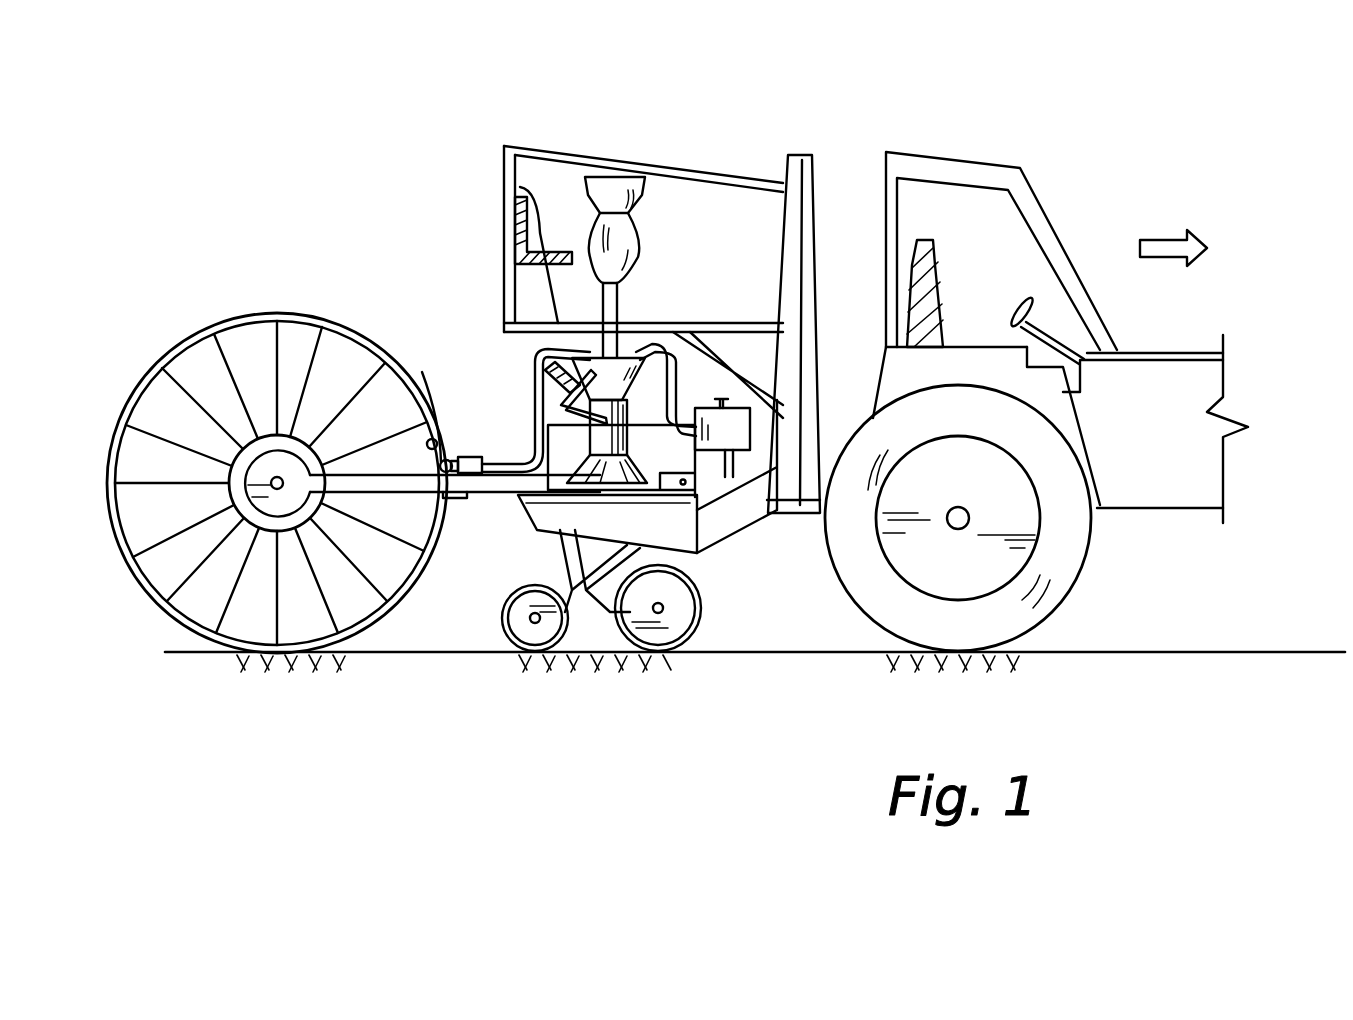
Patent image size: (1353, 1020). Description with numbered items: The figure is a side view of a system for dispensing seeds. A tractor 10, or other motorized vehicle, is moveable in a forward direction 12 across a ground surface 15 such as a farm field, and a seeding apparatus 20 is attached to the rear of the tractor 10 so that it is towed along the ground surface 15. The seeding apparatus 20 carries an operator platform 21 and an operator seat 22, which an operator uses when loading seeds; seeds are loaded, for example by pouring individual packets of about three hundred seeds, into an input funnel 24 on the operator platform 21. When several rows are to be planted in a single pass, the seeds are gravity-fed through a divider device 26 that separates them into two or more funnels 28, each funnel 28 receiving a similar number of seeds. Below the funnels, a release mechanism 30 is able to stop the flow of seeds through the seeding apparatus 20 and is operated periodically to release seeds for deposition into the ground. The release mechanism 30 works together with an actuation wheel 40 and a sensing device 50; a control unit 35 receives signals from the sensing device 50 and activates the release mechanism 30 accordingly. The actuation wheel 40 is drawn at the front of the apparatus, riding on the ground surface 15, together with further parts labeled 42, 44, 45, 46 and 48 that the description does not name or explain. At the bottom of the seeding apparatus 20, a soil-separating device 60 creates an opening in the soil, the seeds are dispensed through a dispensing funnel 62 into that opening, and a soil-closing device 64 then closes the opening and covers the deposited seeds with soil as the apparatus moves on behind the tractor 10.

The tractor 10 is at (982, 98).
The forward direction 12 is at (1167, 240).
The ground surface 15 is at (792, 703).
The seeding apparatus 20 is at (648, 352).
The operator platform 21 is at (735, 320).
The operator seat 22 is at (503, 172).
The input funnel 24 is at (583, 182).
The divider device 26 is at (630, 233).
The funnel 28 is at (622, 362).
The release mechanism 30 is at (548, 397).
The control unit 35 is at (740, 422).
The actuation wheel 40 is at (326, 454).
The wheel rim 42 is at (231, 316).
The wheel hub 44 is at (107, 448).
The sensor clamp 45 is at (446, 440).
The spoke 46 is at (307, 380).
The axle arm 48 is at (465, 490).
The sensing device 50 is at (463, 460).
The soil-separating device 60 is at (703, 612).
The dispensing funnel 62 is at (580, 553).
The soil-closing device 64 is at (502, 620).